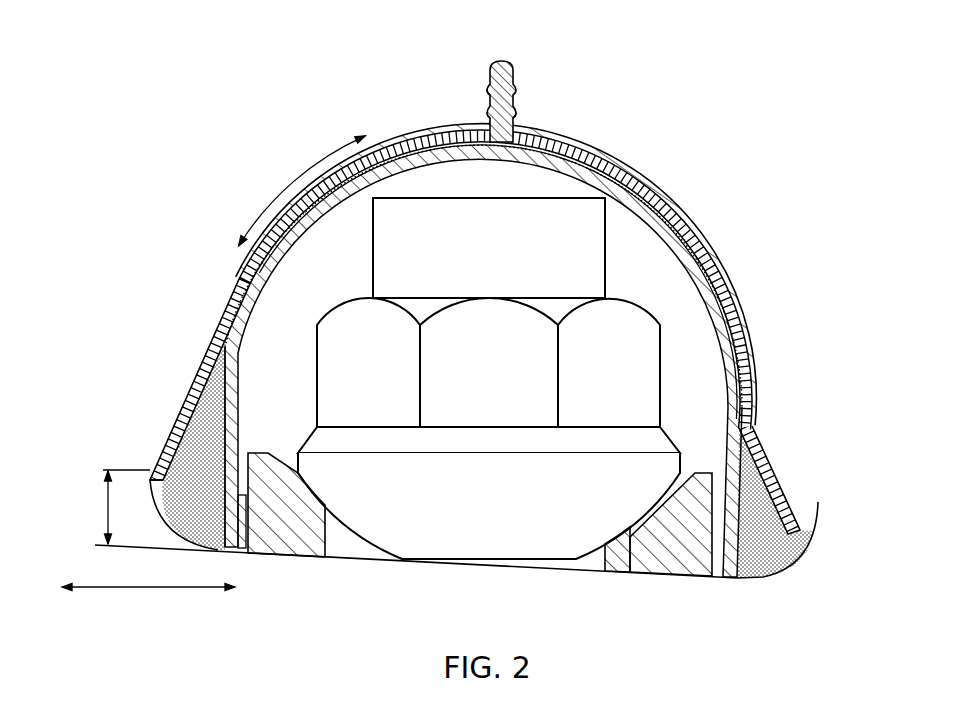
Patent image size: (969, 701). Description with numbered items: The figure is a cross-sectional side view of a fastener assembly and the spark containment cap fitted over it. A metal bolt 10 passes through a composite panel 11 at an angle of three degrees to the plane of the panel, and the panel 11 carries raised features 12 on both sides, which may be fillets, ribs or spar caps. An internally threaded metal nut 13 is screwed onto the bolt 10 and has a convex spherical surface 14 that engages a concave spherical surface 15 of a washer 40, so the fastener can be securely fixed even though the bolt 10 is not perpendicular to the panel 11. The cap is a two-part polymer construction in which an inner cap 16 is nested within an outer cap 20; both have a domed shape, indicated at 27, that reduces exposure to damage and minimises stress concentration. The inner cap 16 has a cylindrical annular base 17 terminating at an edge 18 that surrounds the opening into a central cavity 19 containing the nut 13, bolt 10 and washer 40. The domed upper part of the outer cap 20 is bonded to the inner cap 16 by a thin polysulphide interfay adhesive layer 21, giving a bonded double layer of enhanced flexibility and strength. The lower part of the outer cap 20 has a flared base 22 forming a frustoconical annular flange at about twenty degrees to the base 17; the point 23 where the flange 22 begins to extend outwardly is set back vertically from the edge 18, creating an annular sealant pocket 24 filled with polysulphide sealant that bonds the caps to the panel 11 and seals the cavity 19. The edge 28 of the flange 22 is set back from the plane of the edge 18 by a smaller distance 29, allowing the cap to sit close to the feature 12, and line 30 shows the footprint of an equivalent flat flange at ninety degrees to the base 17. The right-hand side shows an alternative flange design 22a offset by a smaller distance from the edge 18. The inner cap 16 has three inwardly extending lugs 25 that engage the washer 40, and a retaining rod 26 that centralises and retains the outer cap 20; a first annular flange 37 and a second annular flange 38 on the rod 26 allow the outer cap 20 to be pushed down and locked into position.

The metal bolt 10 is at (427, 197).
The composite panel 11 is at (782, 567).
The raised features 12 is at (150, 505).
The nut 13 is at (661, 370).
The convex spherical surface 14 is at (618, 556).
The concave spherical surface 15 is at (275, 458).
The inner cap 16 is at (708, 263).
The cylindrical annular base 17 is at (222, 408).
The edge 18 is at (228, 555).
The central cavity 19 is at (631, 281).
The outer cap 20 is at (600, 148).
The interfay adhesive layer 21 is at (660, 202).
The flared base 22 is at (168, 440).
The alternative flange design 22a is at (775, 440).
The point where the flange begins to extend outwardly 23 is at (217, 327).
The annular sealant pocket 24 is at (176, 507).
The inwardly extending lugs 25 is at (242, 553).
The retaining rod 26 is at (503, 60).
The domed shape 27 is at (302, 192).
The edge of the flange 28 is at (160, 512).
The distance 29 is at (109, 507).
The line 30 is at (148, 575).
The first annular flange 37 is at (487, 95).
The second annular flange 38 is at (517, 118).
The washer 40 is at (678, 556).